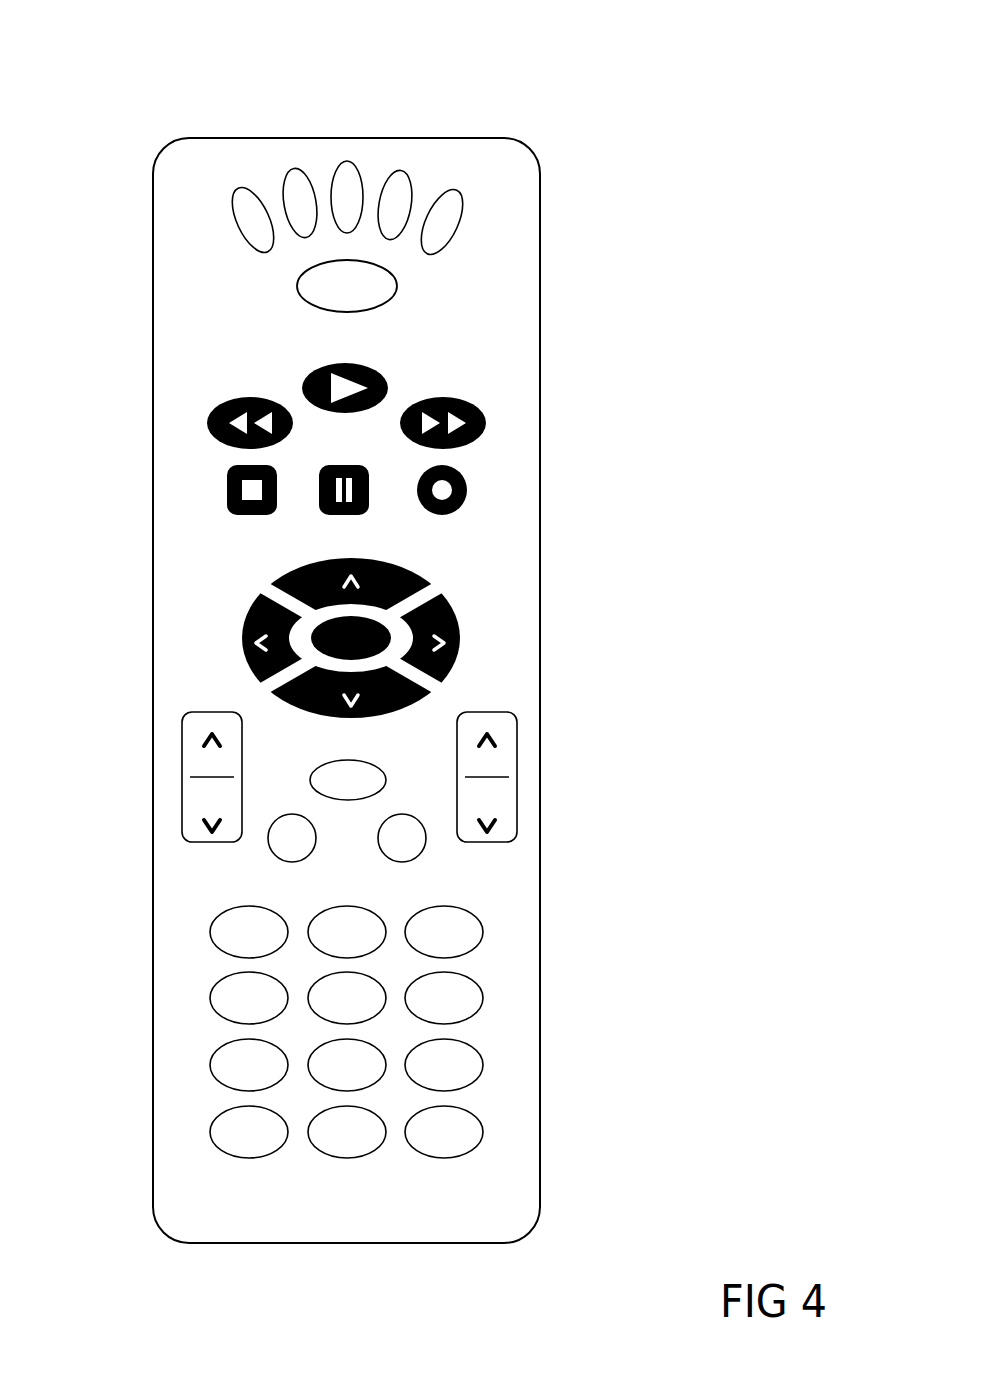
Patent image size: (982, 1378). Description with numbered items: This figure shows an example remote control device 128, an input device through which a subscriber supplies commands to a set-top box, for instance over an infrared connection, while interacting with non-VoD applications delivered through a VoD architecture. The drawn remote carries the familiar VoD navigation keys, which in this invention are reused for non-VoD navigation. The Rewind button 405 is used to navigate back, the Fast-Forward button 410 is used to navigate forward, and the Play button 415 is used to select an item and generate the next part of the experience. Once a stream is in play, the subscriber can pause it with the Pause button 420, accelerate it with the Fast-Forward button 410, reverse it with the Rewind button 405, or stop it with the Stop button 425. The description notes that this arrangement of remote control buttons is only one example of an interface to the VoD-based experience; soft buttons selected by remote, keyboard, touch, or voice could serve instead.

The remote control device 128 is at (760, 88).
The Rewind button 405 is at (207, 424).
The Fast-Forward button 410 is at (486, 423).
The Play button 415 is at (389, 388).
The Pause button 420 is at (363, 515).
The Stop button 425 is at (227, 510).